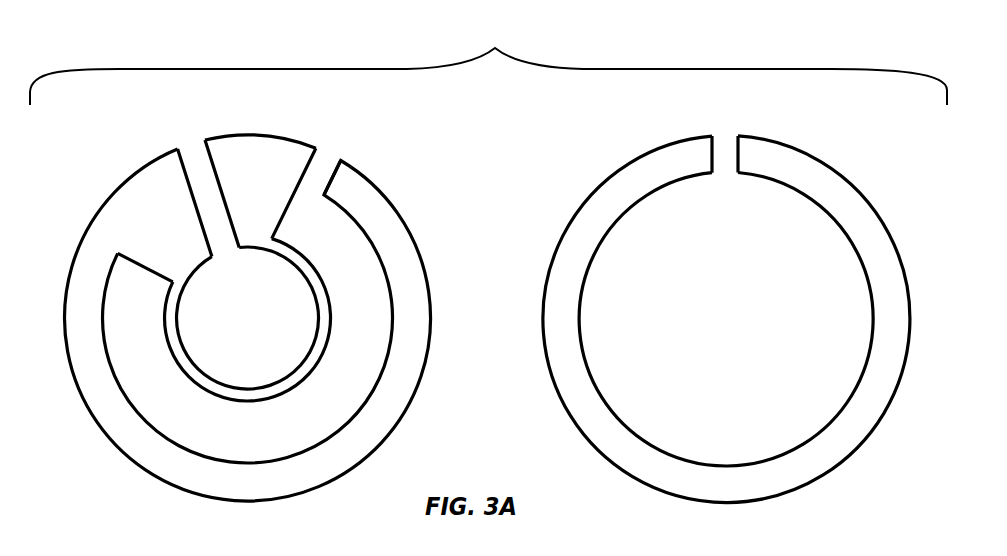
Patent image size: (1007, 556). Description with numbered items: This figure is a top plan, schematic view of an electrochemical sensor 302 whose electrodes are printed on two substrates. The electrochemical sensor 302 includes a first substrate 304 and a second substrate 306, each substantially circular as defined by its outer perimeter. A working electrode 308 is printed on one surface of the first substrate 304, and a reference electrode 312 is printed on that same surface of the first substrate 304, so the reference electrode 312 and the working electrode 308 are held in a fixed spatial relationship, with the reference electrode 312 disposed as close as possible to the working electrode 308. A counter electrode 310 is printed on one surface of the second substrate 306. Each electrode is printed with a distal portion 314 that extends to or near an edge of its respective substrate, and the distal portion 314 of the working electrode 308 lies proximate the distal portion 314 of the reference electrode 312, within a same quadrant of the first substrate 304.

The electrochemical sensor 302 is at (488, 61).
The first substrate 304 is at (150, 198).
The second substrate 306 is at (655, 165).
The working electrode 308 is at (266, 335).
The counter electrode 310 is at (750, 343).
The reference electrode 312 is at (146, 345).
The distal portion 314 is at (176, 129).